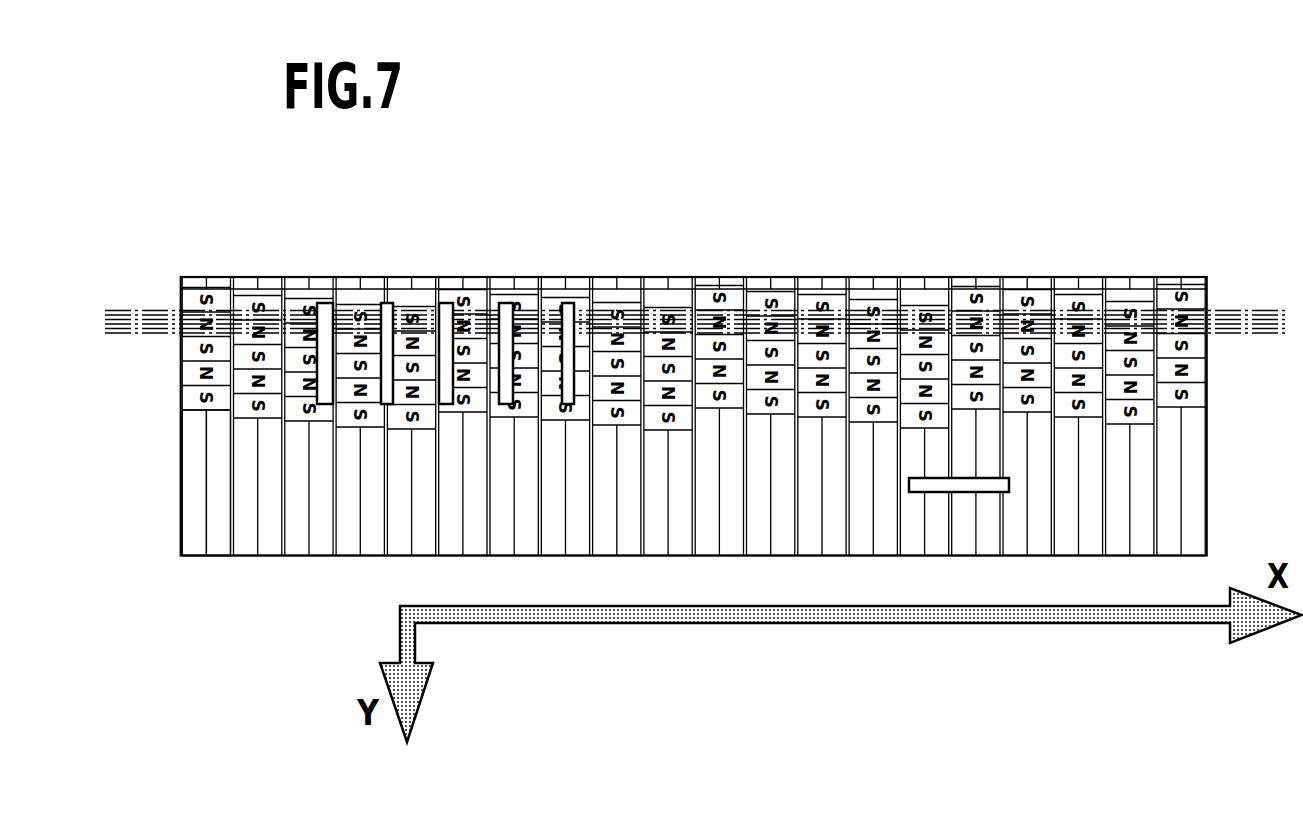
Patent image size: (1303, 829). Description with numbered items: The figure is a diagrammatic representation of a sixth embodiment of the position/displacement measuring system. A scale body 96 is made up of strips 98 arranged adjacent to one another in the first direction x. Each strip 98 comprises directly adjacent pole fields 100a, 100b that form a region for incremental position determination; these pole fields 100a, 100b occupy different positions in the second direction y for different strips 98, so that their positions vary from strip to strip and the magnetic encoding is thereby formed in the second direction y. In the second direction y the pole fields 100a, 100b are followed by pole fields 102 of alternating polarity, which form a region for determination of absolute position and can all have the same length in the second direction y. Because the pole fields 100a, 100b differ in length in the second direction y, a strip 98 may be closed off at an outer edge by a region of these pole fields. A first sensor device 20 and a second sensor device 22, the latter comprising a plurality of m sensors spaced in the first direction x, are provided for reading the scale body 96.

The first sensor device 20 is at (975, 485).
The second sensor device 22 is at (578, 267).
The scale body 96 is at (172, 512).
The strip 98 is at (233, 560).
The pole field 100a is at (198, 435).
The pole field 100b is at (223, 475).
The pole fields 102 is at (180, 397).